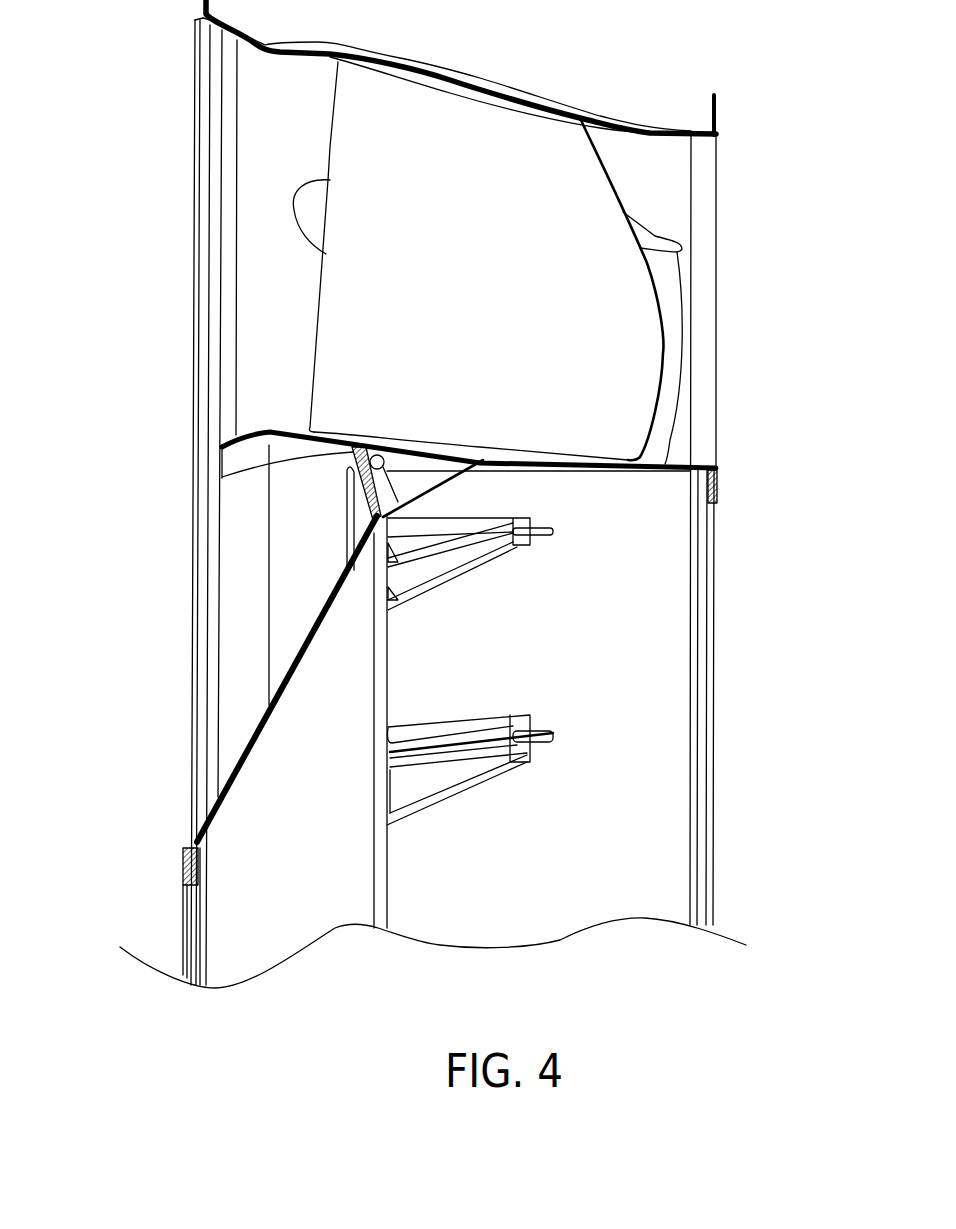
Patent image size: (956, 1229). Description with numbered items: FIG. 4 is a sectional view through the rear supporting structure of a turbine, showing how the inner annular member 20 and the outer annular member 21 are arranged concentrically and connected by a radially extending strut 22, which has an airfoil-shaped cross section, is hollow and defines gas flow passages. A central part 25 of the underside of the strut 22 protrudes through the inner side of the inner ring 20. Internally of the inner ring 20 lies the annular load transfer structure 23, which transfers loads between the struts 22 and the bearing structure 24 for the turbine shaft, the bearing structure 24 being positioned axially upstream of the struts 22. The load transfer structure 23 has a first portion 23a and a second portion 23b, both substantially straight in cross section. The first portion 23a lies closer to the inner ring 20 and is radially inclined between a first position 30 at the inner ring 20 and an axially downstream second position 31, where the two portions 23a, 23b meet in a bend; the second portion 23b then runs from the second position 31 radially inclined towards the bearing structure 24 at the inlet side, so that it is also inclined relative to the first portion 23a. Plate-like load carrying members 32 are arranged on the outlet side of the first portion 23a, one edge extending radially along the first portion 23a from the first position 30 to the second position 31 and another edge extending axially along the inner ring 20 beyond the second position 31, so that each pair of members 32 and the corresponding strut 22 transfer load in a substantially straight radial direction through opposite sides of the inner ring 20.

The inner annular member 20 is at (650, 603).
The outer annular member 21 is at (568, 113).
The strut 22 is at (578, 307).
The annular load transfer structure 23 is at (282, 898).
The first portion 23a is at (360, 508).
The second portion 23b is at (294, 670).
The bearing structure 24 is at (183, 866).
The central part of an underside of each strut 25 is at (533, 738).
The first position 30 is at (353, 450).
The second position 31 is at (373, 513).
The load carrying member 32 is at (413, 485).